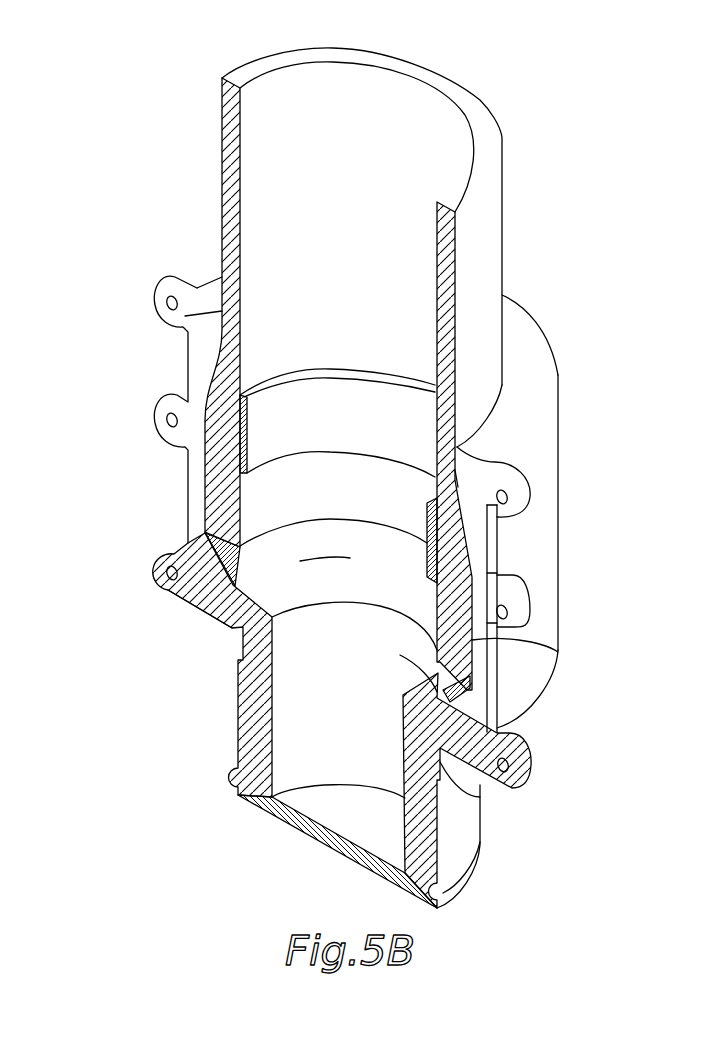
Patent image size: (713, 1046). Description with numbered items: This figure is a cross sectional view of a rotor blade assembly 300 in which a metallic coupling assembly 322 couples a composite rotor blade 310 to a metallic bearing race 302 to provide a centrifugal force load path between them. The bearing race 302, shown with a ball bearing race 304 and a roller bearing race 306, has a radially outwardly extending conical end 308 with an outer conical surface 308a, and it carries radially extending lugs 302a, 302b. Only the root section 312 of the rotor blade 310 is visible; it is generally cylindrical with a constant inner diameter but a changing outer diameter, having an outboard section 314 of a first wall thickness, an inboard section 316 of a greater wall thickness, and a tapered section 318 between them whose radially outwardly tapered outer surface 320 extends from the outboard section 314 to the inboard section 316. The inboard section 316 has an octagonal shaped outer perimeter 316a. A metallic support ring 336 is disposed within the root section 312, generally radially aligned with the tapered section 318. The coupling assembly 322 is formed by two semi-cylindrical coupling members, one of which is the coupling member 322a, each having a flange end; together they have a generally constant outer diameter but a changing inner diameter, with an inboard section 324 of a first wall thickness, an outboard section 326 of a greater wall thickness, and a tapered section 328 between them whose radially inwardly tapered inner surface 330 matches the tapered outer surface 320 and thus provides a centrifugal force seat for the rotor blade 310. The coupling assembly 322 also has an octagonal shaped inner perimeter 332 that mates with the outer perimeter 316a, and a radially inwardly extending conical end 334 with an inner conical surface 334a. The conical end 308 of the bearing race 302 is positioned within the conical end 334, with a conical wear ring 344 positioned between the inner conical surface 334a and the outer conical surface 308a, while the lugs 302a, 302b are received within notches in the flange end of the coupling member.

The rotor blade assembly 300 is at (622, 253).
The metallic bearing race 302 is at (465, 837).
The radially extending lug 302a is at (162, 597).
The radially extending lug 302b is at (495, 733).
The ball bearing race 304 is at (443, 890).
The roller bearing race 306 is at (450, 767).
The radially outwardly extending conical end 308 is at (343, 585).
The outer conical surface 308a is at (220, 573).
The composite rotor blade 310 is at (493, 205).
The root section 312 is at (493, 247).
The outboard section 314 is at (443, 283).
The inboard section 316 is at (430, 620).
The octagonal shaped outer perimeter 316a is at (432, 670).
The tapered section 318 is at (448, 547).
The radially outwardly tapered outer surface 320 is at (428, 532).
The metallic coupling assembly 322 is at (545, 321).
The semi-cylindrical coupling member 322a is at (538, 370).
The inboard section 324 is at (533, 688).
The outboard section 326 is at (547, 448).
The tapered section 328 is at (530, 555).
The radially inwardly tapered inner surface 330 is at (450, 530).
The octagonal shaped inner perimeter 332 is at (478, 630).
The radially inwardly extending conical end 334 is at (200, 543).
The inner conical surface 334a is at (196, 596).
The metallic support ring 336 is at (313, 396).
The conical wear ring 344 is at (450, 718).